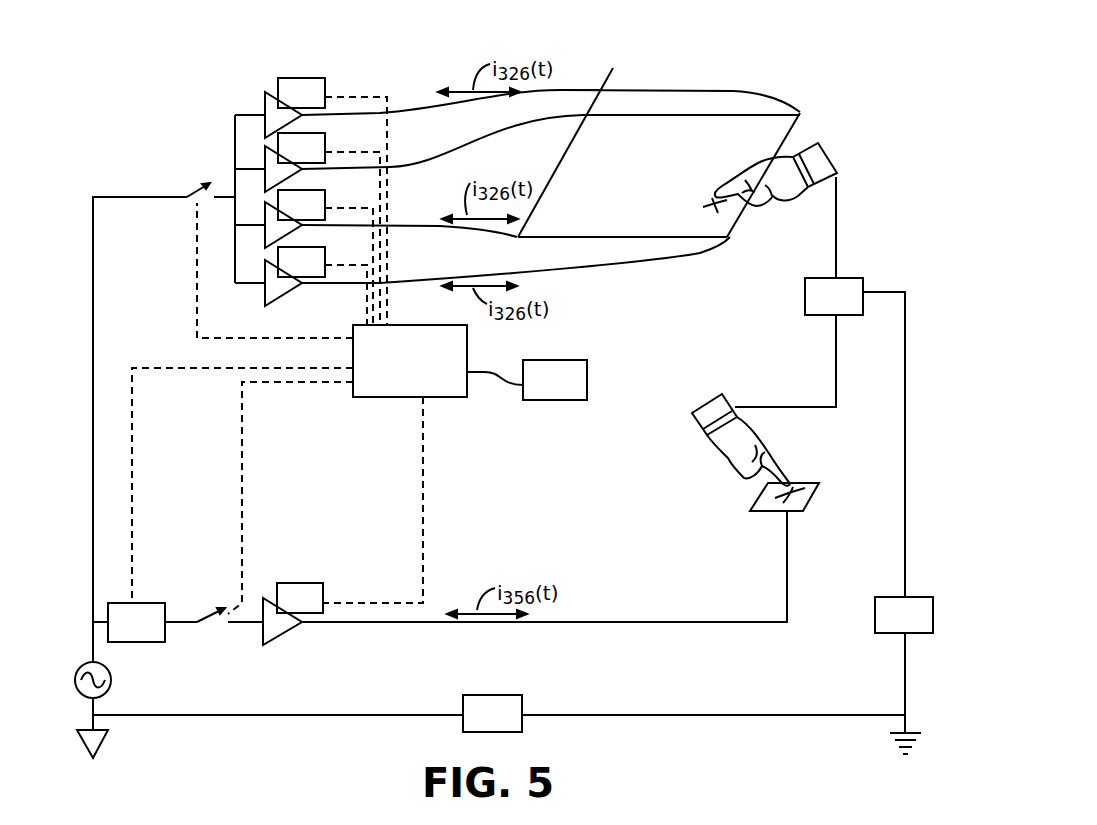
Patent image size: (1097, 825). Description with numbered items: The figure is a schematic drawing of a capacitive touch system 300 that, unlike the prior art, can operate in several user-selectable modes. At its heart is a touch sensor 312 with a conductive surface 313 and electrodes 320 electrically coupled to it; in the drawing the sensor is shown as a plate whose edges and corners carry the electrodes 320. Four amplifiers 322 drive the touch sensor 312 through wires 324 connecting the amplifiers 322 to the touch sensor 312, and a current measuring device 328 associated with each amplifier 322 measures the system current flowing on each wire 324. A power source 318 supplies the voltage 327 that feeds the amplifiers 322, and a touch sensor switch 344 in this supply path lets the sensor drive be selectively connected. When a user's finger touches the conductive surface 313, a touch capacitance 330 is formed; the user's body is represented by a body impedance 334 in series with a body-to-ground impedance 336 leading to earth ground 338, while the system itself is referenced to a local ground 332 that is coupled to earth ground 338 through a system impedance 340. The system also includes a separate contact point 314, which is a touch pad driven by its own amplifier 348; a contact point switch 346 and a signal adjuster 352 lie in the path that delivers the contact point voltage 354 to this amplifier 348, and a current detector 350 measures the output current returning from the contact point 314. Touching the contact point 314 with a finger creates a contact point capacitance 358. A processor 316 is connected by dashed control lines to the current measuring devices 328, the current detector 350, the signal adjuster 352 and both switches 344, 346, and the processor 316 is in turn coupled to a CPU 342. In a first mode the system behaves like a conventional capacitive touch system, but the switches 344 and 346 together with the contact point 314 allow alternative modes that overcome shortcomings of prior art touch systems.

The touch system 300 is at (220, 75).
The touch sensor 312 is at (720, 135).
The conductive surface 313 is at (655, 128).
The contact point 314 is at (793, 513).
The processor 316 is at (299, 408).
The power source 318 is at (73, 674).
The electrodes 320 is at (730, 273).
The amplifiers 322 is at (295, 122).
The wires 324 is at (405, 114).
The voltage 327 is at (160, 196).
The current measuring devices 328 is at (311, 201).
The touch capacitance 330 is at (740, 222).
The local ground 332 is at (105, 742).
The body impedance 334 is at (820, 437).
The body-to-ground impedance 336 is at (904, 656).
The earth ground 338 is at (892, 733).
The system impedance 340 is at (499, 713).
The CPU 342 is at (527, 380).
The touch sensor switch 344 is at (190, 198).
The contact point switch 346 is at (210, 622).
The amplifier 348 is at (290, 632).
The current detector 350 is at (293, 614).
The signal adjuster 352 is at (145, 622).
The contact point voltage 354 is at (185, 624).
The contact point capacitance 358 is at (810, 480).